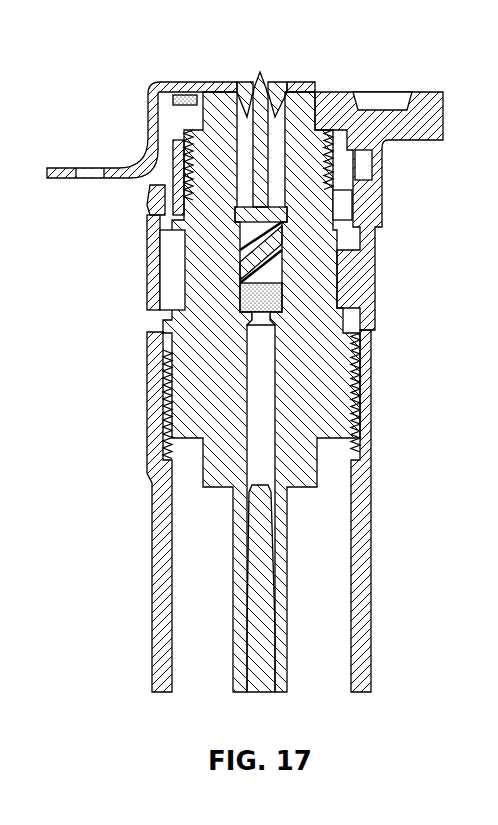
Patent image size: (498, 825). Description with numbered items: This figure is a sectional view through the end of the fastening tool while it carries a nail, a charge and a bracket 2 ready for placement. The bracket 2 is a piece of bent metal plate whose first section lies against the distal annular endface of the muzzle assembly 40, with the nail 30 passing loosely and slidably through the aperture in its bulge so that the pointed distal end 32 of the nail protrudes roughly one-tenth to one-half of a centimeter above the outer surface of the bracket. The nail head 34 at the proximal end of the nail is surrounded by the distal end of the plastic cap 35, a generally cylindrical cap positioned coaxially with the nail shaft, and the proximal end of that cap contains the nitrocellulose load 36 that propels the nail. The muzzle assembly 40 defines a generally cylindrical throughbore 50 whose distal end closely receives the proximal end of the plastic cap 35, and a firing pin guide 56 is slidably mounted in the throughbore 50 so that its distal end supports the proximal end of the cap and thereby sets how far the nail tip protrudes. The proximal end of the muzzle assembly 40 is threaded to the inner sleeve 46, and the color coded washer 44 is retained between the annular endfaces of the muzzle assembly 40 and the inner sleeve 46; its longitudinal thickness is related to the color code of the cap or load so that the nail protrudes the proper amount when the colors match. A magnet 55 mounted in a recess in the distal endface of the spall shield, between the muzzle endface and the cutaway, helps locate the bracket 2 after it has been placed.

The bracket 2 is at (110, 158).
The nail 30 is at (328, 150).
The pointed distal end 32 is at (258, 75).
The nail head 34 is at (160, 252).
The plastic cap 35 is at (286, 262).
The nitrocellulose load 36 is at (240, 295).
The muzzle assembly 40 is at (322, 105).
The color coded washer 44 is at (373, 340).
The inner sleeve 46 is at (372, 597).
The throughbore 50 is at (334, 200).
The magnet 55 is at (183, 95).
The firing pin guide 56 is at (233, 520).